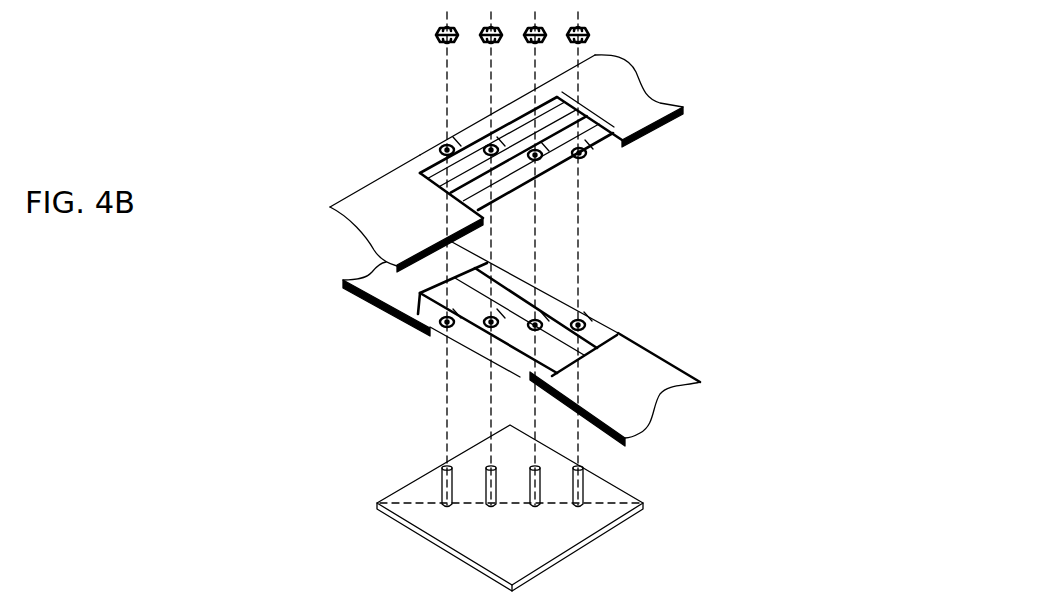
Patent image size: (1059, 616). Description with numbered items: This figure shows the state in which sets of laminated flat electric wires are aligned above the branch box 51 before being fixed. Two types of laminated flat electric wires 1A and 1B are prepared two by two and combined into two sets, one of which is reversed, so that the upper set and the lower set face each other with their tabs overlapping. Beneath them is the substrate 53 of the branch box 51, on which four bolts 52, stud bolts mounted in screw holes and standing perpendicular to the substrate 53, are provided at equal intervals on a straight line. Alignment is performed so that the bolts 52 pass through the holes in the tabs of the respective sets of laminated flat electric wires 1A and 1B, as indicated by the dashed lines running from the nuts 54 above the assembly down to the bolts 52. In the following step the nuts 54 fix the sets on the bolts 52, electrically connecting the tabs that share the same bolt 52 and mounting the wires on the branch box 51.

The laminated flat electric wire 1A is at (275, 237).
The laminated flat electric wire 1B is at (797, 110).
The branch box 51 is at (562, 517).
The bolt 52 is at (435, 484).
The substrate 53 is at (448, 609).
The nut 54 is at (590, 42).